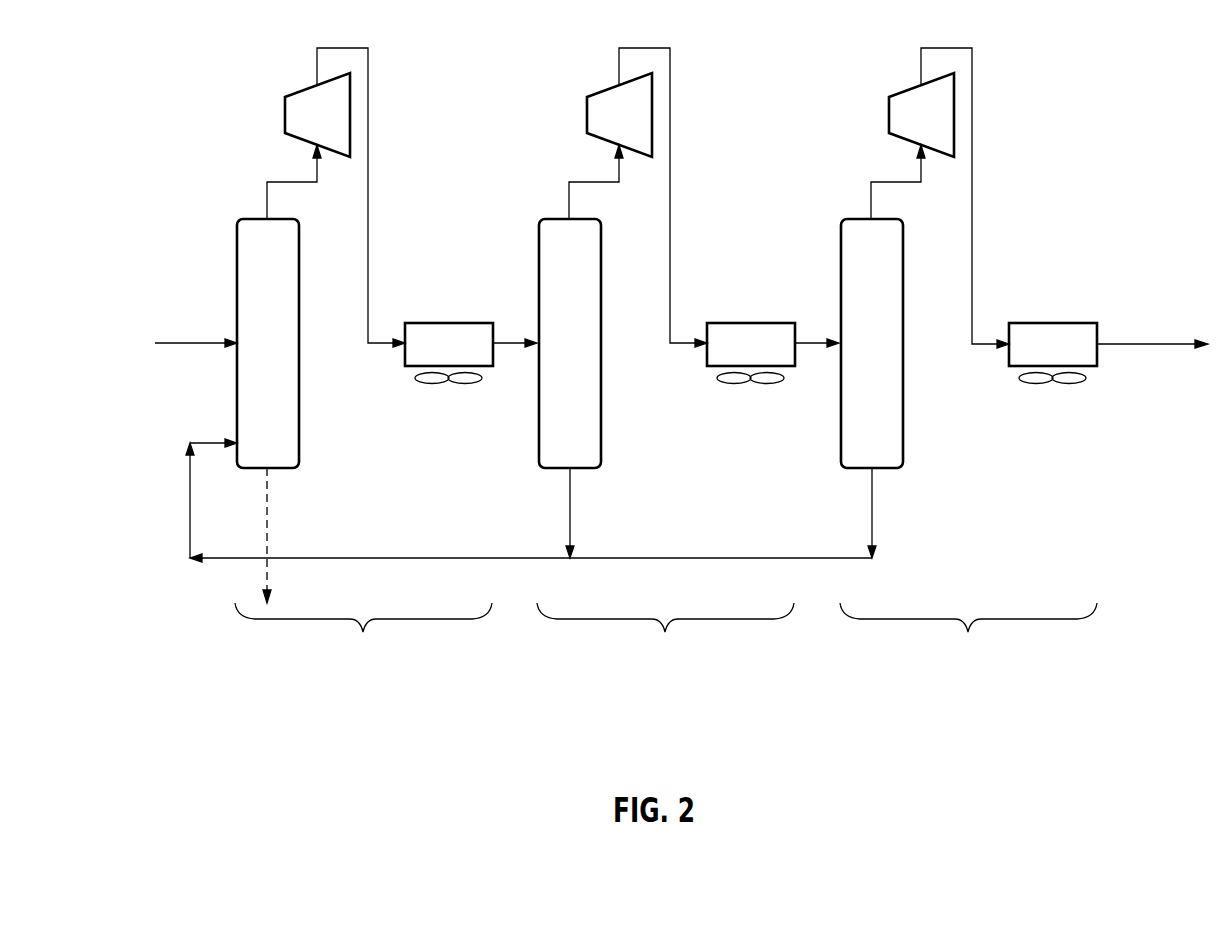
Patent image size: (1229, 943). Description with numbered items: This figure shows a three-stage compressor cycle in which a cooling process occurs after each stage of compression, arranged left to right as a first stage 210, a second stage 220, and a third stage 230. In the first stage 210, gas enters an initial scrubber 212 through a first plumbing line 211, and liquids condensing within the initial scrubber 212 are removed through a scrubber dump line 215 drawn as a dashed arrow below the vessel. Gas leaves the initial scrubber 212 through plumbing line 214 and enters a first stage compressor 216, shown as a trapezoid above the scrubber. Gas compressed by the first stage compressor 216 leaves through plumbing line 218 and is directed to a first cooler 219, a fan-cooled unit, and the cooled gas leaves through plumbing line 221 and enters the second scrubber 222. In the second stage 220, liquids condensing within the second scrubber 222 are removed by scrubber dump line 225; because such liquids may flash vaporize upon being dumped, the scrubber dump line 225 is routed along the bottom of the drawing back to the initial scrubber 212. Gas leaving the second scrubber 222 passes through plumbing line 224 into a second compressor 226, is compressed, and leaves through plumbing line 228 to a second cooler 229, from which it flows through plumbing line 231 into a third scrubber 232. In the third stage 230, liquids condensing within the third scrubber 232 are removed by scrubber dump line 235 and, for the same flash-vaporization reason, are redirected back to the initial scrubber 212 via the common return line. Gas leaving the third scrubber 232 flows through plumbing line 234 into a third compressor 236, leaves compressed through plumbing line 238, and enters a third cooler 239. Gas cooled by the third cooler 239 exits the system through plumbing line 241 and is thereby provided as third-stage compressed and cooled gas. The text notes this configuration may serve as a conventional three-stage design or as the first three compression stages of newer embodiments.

The first stage 210 is at (363, 636).
The first plumbing line 211 is at (197, 343).
The initial scrubber 212 is at (234, 252).
The plumbing line 214 is at (295, 181).
The scrubber dump line 215 is at (268, 520).
The first stage compressor 216 is at (285, 114).
The plumbing line 218 is at (368, 195).
The first cooler 219 is at (448, 322).
The second stage 220 is at (665, 636).
The plumbing line 221 is at (515, 341).
The second scrubber 222 is at (536, 252).
The plumbing line 224 is at (597, 181).
The scrubber dump line 225 is at (572, 520).
The second compressor 226 is at (587, 114).
The plumbing line 228 is at (670, 195).
The second cooler 229 is at (750, 322).
The third stage 230 is at (968, 636).
The plumbing line 231 is at (817, 341).
The third scrubber 232 is at (838, 252).
The plumbing line 234 is at (899, 181).
The scrubber dump line 235 is at (874, 520).
The third compressor 236 is at (889, 114).
The plumbing line 238 is at (972, 195).
The third cooler 239 is at (1053, 322).
The plumbing line 241 is at (1118, 343).